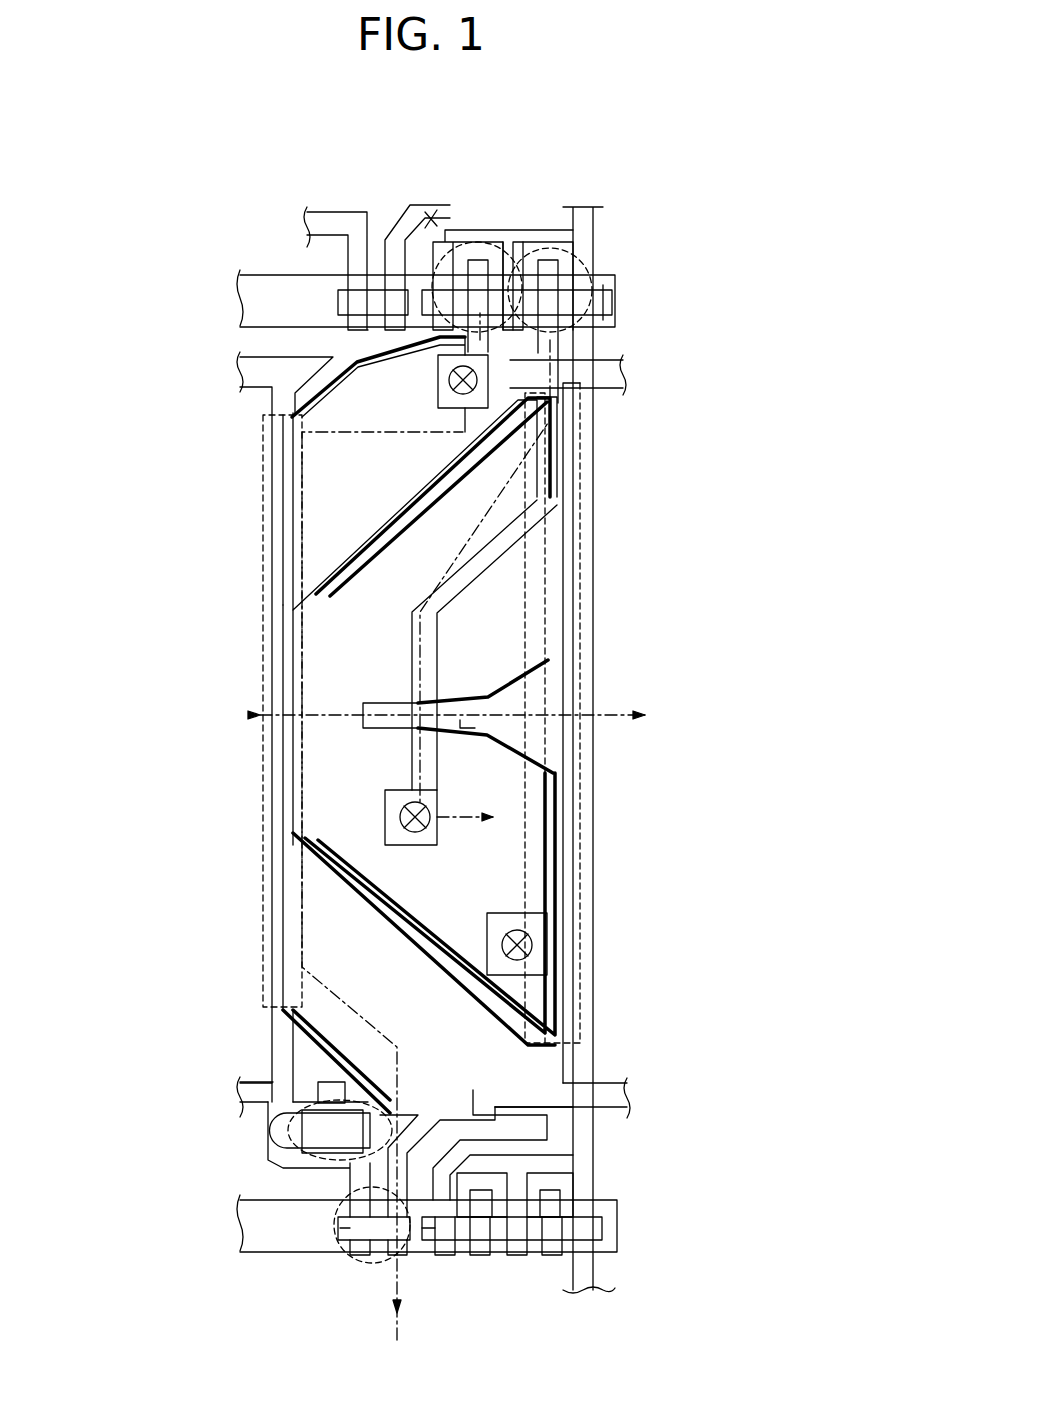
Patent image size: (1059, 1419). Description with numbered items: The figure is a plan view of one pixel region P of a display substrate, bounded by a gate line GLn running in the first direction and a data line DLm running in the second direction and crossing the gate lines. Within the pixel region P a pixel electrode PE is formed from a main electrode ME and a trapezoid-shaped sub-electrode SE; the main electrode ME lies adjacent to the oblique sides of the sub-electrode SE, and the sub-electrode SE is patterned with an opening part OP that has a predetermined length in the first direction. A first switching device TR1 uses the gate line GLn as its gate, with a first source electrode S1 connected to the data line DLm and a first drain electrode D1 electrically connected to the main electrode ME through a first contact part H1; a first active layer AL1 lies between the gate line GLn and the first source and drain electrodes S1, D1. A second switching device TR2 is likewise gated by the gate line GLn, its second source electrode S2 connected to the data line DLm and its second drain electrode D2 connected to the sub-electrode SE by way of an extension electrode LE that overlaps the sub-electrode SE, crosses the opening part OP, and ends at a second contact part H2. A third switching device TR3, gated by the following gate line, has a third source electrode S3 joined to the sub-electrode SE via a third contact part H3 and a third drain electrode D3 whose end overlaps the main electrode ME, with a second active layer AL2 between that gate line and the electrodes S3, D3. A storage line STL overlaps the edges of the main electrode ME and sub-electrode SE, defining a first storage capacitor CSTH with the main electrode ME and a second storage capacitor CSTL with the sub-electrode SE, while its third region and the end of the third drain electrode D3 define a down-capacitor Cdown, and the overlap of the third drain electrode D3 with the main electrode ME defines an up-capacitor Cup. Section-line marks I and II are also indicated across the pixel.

The pixel region P is at (406, 117).
The n-th gate line GLn is at (618, 300).
The m-th data line DLm is at (585, 1275).
The storage line STL is at (623, 372).
The first storage capacitor CSTH is at (265, 910).
The second storage capacitor CSTL is at (580, 470).
The first active layer AL1 is at (598, 282).
The second active layer AL2 is at (338, 300).
The first source electrode S1 is at (437, 215).
The first switching device TR1 is at (445, 265).
The first drain electrode D1 is at (478, 260).
The second source electrode S2 is at (513, 262).
The second switching device TR2 is at (545, 265).
The second drain electrode D2 is at (565, 265).
The first contact part H1 is at (438, 385).
The second contact part H2 is at (415, 833).
The third contact part H3 is at (512, 931).
The pixel electrode PE is at (340, 725).
The main electrode ME is at (310, 530).
The sub-electrode SE is at (172, 525).
The extension electrode LE is at (437, 640).
The opening part OP is at (460, 722).
The section line II-II' II is at (262, 715).
The section line I-I' I is at (426, 838).
The third drain electrode D3 is at (355, 1172).
The up-capacitor Cup is at (235, 1121).
The down-capacitor Cdown is at (273, 1130).
The third switching device TR3 is at (372, 1258).
The third source electrode S3 is at (393, 1255).